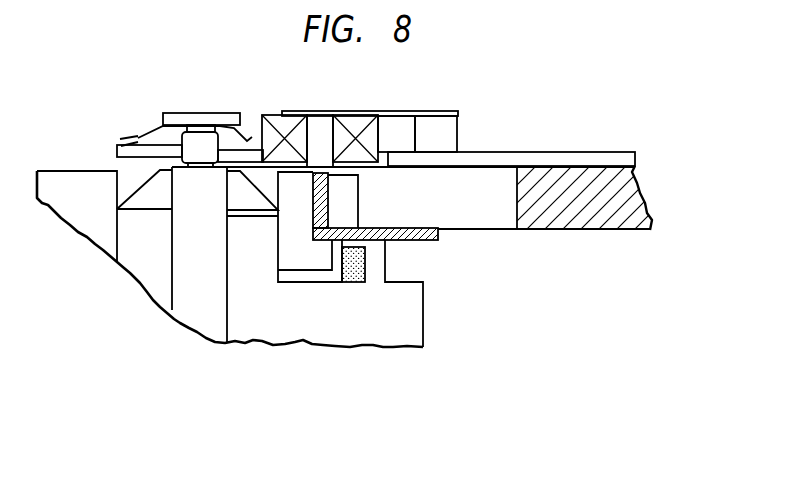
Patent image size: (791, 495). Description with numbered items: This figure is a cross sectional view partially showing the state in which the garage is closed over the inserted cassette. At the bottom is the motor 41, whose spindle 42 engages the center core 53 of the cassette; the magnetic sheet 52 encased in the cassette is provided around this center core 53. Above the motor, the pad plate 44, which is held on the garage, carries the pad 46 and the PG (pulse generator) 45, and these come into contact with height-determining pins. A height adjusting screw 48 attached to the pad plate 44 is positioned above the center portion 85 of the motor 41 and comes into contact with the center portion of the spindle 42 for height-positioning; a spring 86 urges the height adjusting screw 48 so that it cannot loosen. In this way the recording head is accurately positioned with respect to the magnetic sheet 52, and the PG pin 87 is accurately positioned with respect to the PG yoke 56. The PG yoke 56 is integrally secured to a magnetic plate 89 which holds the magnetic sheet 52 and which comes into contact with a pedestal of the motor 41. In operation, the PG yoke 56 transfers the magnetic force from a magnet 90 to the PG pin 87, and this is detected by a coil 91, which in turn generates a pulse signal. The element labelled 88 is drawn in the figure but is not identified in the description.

The motor 41 is at (307, 328).
The spindle 42 is at (137, 193).
The pad plate 44 is at (514, 161).
The PG (pulse generator) 45 is at (332, 133).
The pad 46 is at (632, 198).
The height adjusting screw 48 is at (202, 113).
The magnetic sheet 52 is at (490, 232).
The center core 53 is at (80, 222).
The PG yoke 56 is at (340, 200).
The center portion 85 is at (185, 252).
The spring 86 is at (143, 128).
The PG pin 87 is at (318, 122).
The gap 88 is at (375, 272).
The magnetic plate 89 is at (413, 240).
The magnet 90 is at (357, 283).
The coil 91 is at (278, 120).